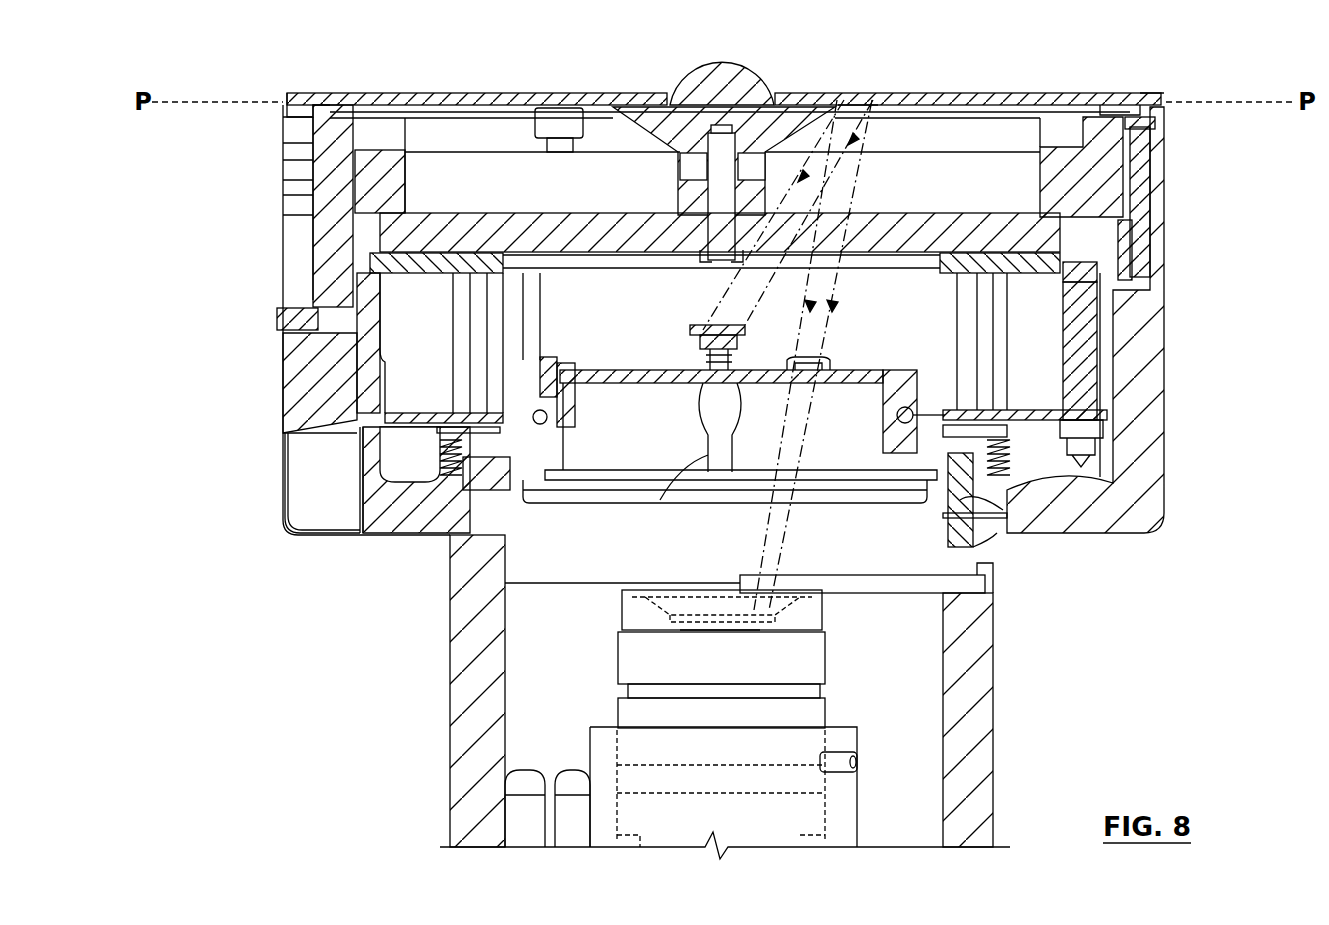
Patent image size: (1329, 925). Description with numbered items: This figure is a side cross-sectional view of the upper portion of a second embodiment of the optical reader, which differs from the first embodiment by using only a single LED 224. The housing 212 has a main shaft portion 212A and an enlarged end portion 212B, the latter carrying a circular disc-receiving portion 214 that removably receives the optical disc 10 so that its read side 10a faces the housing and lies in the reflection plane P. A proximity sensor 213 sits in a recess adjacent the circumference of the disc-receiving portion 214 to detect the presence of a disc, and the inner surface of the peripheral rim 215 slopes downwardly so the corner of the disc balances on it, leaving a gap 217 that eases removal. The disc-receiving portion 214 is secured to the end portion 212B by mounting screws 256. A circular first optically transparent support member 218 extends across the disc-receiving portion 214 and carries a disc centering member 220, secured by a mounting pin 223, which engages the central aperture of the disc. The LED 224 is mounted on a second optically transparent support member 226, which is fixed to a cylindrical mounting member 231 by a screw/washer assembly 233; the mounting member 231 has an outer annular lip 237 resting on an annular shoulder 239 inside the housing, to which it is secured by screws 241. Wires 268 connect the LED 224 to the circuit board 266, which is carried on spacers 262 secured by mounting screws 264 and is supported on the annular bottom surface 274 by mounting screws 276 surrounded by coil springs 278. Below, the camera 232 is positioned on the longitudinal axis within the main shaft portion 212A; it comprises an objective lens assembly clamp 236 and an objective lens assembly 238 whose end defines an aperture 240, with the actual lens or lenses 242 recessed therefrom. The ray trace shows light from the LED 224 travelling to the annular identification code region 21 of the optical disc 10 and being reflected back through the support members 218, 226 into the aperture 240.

The optical disc 10 is at (1015, 93).
The read side 10a is at (1150, 172).
The annular identification code region 21 is at (855, 97).
The housing 212 is at (1040, 560).
The main shaft portion 212A is at (985, 790).
The end portion 212B is at (1130, 390).
The proximity sensor 213 is at (283, 208).
The disc-receiving portion 214 is at (283, 165).
The peripheral rim 215 is at (305, 97).
The gap 217 is at (1130, 97).
The first optically transparent support member 218 is at (905, 220).
The disc centering member 220 is at (700, 95).
The mounting pin 223 is at (757, 72).
The single LED 224 is at (703, 327).
The second optically transparent support member 226 is at (632, 368).
The cylindrical mounting member 231 is at (903, 382).
The camera 232 is at (900, 835).
The screw/washer assembly 233 is at (552, 355).
The objective lens assembly clamp 236 is at (847, 807).
The outer annular lip 237 is at (400, 537).
The objective lens assembly 238 is at (805, 660).
The annular shoulder 239 is at (455, 537).
The aperture 240 is at (657, 592).
The screws 241 is at (995, 530).
The lens or lenses 242 is at (703, 598).
The mounting screws 256 is at (1150, 237).
The spacers 262 is at (410, 255).
The mounting screws 264 is at (1090, 303).
The circuit board 266 is at (437, 413).
The wires 268 is at (718, 395).
The annular bottom surface 274 is at (405, 520).
The mounting screws 276 is at (445, 432).
The coil springs 278 is at (450, 447).